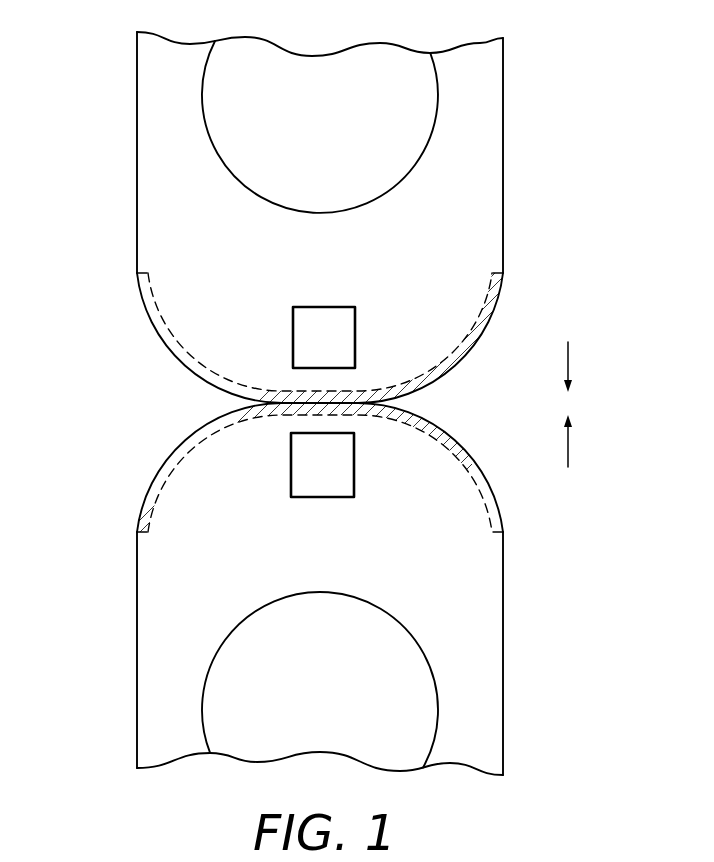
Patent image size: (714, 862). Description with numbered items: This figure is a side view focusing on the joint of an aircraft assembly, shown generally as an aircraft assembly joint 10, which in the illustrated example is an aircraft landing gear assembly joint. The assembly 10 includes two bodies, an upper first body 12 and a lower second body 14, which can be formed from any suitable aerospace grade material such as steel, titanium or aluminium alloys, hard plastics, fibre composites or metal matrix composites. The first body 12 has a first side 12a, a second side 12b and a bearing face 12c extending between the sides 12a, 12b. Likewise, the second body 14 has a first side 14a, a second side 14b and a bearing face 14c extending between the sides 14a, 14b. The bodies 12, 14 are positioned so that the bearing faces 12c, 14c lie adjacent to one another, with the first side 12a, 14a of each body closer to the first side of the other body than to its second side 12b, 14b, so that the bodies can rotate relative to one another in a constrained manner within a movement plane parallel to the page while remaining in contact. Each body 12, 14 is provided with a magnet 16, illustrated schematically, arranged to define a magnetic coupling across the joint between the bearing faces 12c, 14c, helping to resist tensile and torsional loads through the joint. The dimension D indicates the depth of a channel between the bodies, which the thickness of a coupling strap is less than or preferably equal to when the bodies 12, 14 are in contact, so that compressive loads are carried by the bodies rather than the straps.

The aircraft assembly joint 10 is at (97, 78).
The first body 12 is at (334, 281).
The first side of the first body 12a is at (137, 213).
The second side of the first body 12b is at (503, 213).
The bearing face of the first body 12c is at (443, 386).
The second body 14 is at (334, 544).
The first side of the second body 14a is at (137, 592).
The second side of the second body 14b is at (503, 592).
The bearing face of the second body 14c is at (193, 425).
The magnet 16 is at (355, 312).
The depth of the channel D is at (579, 404).